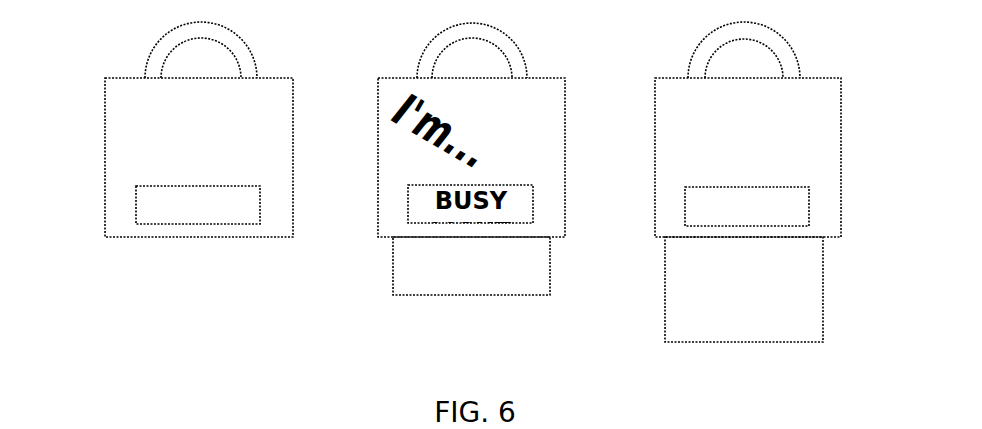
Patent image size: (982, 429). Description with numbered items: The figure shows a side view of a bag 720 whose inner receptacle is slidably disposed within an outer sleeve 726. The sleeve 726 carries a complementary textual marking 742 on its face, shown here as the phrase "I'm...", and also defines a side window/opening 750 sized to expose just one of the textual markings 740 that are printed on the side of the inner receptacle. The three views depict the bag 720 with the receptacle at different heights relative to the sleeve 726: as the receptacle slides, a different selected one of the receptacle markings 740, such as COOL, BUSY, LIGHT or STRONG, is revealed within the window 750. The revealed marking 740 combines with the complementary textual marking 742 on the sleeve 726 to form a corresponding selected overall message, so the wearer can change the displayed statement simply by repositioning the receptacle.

The bag 720 is at (160, 203).
The outer sleeve 726 is at (153, 237).
The complementary textual marking 742 is at (143, 150).
The side window/opening 750 is at (135, 200).
The textual markings 740 is at (732, 216).